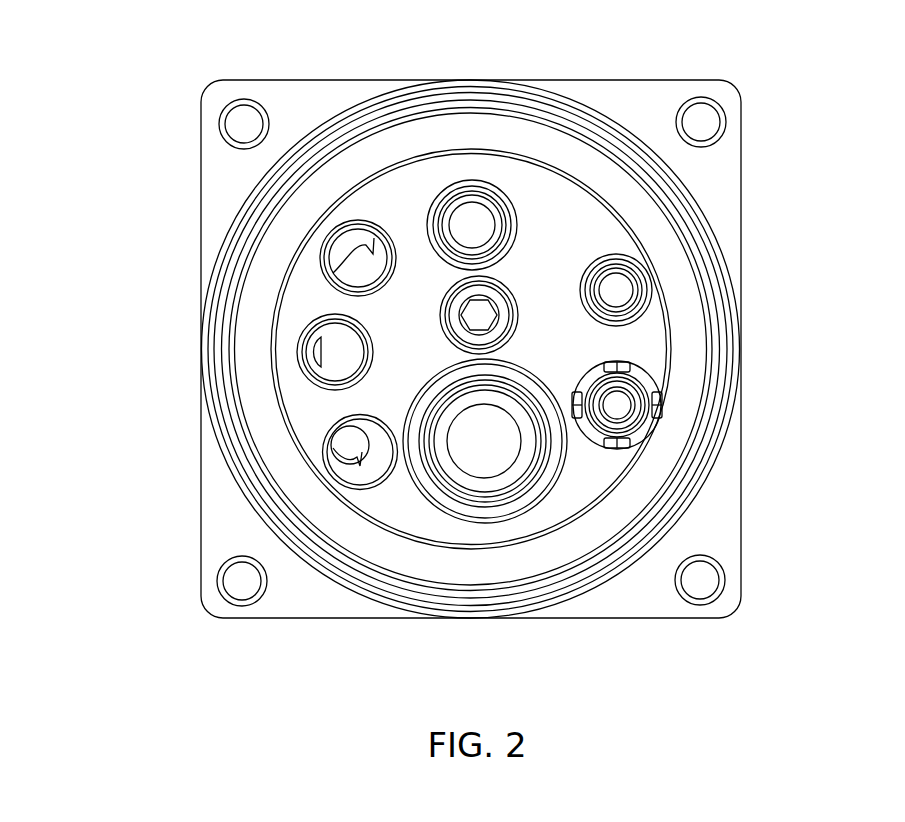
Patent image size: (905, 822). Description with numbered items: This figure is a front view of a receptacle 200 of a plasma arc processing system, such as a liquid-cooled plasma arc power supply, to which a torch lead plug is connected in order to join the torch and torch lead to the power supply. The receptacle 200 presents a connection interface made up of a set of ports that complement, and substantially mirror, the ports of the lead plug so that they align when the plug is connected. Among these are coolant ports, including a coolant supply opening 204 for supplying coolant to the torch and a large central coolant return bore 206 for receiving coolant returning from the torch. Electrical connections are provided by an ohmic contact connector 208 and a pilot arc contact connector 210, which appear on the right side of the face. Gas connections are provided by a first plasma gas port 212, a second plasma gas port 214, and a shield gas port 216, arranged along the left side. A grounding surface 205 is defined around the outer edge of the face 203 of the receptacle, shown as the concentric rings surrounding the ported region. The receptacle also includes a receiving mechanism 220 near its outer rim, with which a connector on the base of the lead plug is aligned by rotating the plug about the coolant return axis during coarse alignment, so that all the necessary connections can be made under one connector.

The receptacle 200 is at (114, 82).
The face 203 is at (538, 265).
The coolant supply opening 204 is at (471, 182).
The grounding surface 205 is at (570, 157).
The main shaft bore 206 is at (470, 505).
The ohmic contact connector 208 is at (652, 390).
The pilot arc contact connector 210 is at (650, 306).
The first plasma gas port 212 is at (320, 258).
The second plasma gas port 214 is at (297, 352).
The shield gas port 216 is at (322, 444).
The receiving mechanism 220 is at (242, 498).